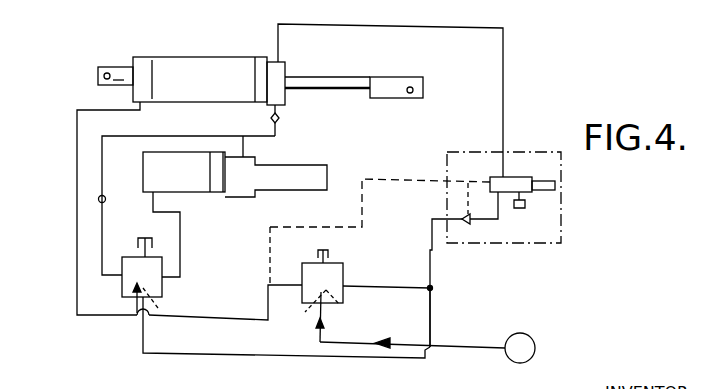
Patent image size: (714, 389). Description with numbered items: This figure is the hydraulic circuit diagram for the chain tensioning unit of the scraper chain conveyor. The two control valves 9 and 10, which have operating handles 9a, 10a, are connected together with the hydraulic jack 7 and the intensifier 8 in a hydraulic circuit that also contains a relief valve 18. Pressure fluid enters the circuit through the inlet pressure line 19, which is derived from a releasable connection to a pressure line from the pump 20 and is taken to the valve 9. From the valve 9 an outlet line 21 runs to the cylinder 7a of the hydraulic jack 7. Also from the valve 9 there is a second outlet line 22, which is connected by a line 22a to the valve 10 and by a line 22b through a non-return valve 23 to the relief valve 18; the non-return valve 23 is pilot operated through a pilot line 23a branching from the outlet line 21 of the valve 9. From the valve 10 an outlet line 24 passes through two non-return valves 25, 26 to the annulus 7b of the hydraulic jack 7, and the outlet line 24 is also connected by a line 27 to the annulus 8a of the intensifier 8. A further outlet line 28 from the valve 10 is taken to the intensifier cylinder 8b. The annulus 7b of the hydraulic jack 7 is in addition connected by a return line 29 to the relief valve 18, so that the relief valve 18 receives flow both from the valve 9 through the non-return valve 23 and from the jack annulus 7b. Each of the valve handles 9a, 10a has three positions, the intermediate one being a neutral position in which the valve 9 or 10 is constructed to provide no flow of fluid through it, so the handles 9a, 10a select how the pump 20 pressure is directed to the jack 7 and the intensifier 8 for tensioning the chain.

The hydraulic jack 7 is at (208, 80).
The cylinder 7a is at (155, 82).
The annulus 7b is at (277, 72).
The intensifier 8 is at (143, 163).
The annulus 8a is at (257, 160).
The intensifier cylinder 8b is at (182, 177).
The control valve 9 is at (328, 290).
The operating handle 9a is at (312, 307).
The control valve 10 is at (163, 288).
The operating handle 10a is at (128, 298).
The relief valve 18 is at (563, 237).
The inlet pressure line 19 is at (463, 348).
The pump 20 is at (535, 348).
The outlet line 21 is at (284, 284).
The outlet line 22 is at (390, 286).
The line 22a is at (430, 302).
The line 22b is at (431, 263).
The non-return valve 23 is at (470, 222).
The pilot line 23a is at (415, 178).
The outlet line 24 is at (100, 255).
The non-return valve 25 is at (99, 201).
The non-return valve 26 is at (279, 118).
The line 27 is at (243, 146).
The outlet line 28 is at (181, 245).
The return line 29 is at (503, 70).